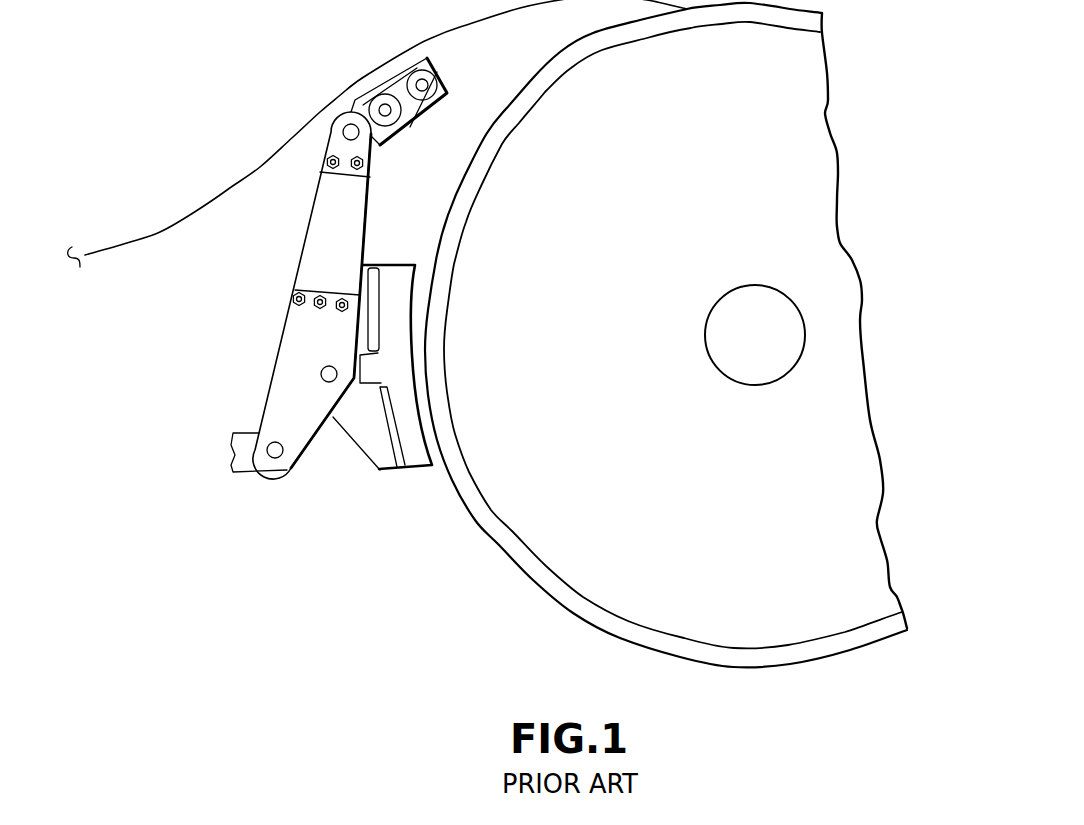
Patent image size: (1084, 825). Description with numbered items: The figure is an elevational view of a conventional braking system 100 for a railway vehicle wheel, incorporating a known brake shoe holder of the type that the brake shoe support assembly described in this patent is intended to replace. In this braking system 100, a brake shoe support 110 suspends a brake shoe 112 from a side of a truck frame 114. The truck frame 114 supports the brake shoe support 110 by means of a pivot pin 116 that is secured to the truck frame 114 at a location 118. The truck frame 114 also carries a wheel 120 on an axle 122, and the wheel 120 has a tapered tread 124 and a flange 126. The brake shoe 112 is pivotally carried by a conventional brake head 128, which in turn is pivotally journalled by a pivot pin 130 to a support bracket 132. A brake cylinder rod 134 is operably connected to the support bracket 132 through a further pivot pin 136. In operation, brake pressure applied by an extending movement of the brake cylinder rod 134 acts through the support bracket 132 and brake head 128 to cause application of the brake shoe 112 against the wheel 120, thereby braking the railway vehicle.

The braking system 100 is at (140, 331).
The brake shoe support 110 is at (275, 243).
The brake shoe 112 is at (407, 272).
The truck frame 114 is at (461, 27).
The pivot pin 116 is at (345, 130).
The location 118 is at (410, 122).
The wheel 120 is at (597, 590).
The axle 122 is at (777, 312).
The tapered tread 124 is at (538, 577).
The flange 126 is at (495, 540).
The brake head 128 is at (368, 437).
The pivot pin 130 is at (324, 366).
The support bracket 132 is at (285, 362).
The brake cylinder rod 134 is at (250, 468).
The pivot pin 136 is at (278, 458).